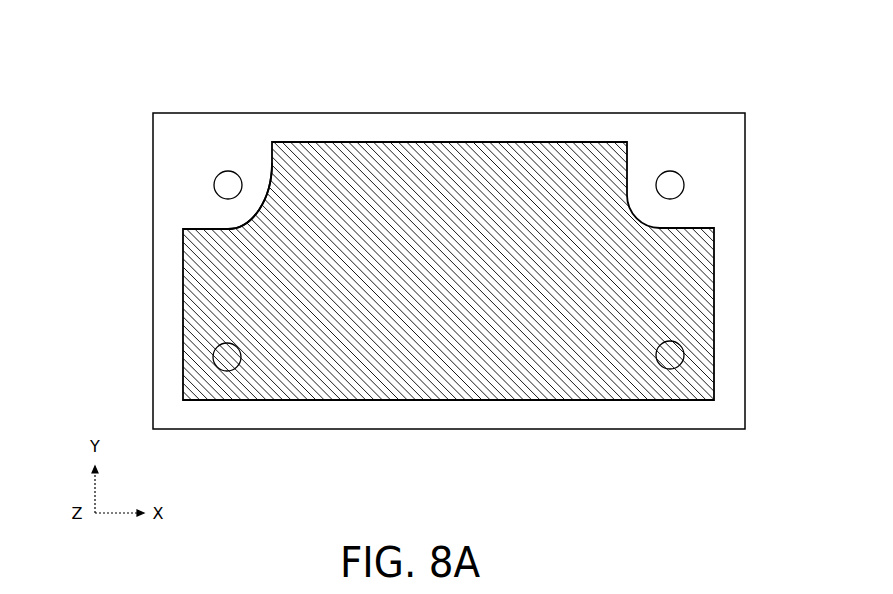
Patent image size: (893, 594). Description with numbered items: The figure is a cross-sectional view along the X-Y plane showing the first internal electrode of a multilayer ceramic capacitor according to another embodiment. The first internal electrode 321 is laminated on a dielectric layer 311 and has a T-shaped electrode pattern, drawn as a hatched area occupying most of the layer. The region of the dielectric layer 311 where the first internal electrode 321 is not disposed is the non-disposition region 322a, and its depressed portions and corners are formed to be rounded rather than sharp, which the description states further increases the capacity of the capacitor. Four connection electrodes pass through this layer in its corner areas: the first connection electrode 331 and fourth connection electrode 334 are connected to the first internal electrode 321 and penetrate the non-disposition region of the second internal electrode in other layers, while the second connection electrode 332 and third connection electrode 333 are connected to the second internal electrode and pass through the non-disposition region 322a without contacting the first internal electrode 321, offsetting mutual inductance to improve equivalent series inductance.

The dielectric layer 311 is at (447, 128).
The first internal electrode 321 is at (537, 160).
The non-disposition region 322a is at (257, 182).
The first connection electrode 331 is at (225, 370).
The second connection electrode 332 is at (223, 171).
The third connection electrode 333 is at (675, 171).
The fourth connection electrode 334 is at (673, 368).